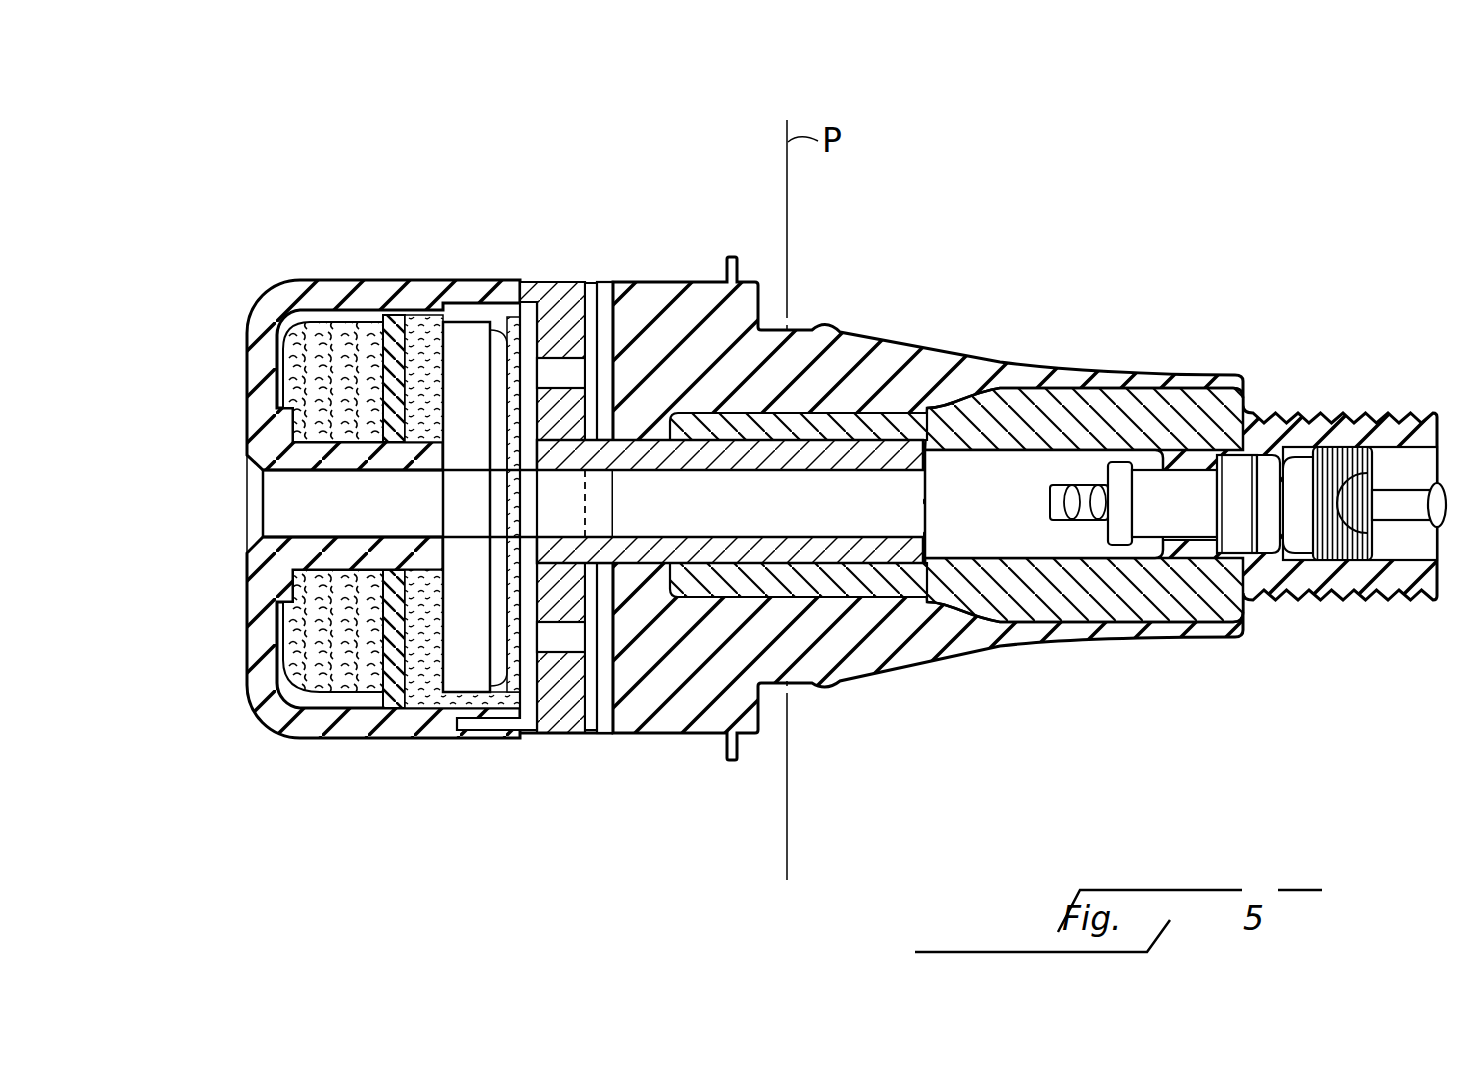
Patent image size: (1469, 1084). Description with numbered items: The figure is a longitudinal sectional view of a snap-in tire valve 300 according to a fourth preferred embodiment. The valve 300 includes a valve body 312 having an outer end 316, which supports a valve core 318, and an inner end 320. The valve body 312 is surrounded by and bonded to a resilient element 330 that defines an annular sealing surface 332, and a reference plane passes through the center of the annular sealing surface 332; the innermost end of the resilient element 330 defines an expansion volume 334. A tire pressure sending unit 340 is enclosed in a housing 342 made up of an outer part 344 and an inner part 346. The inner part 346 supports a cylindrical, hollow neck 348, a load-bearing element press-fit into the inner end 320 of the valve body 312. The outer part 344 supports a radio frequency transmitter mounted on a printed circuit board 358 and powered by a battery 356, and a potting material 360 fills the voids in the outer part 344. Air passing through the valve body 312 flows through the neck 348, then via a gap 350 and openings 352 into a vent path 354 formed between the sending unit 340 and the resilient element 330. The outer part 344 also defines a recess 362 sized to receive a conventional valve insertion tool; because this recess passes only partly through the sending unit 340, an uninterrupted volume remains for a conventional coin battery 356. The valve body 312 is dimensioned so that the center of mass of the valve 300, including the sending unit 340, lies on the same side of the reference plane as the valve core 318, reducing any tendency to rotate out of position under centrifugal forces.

The snap-in tire valve 300 is at (941, 493).
The valve body 312 is at (1070, 410).
The outer end 316 is at (1320, 427).
The valve core 318 is at (1242, 528).
The inner end 320 is at (798, 420).
The resilient element 330 is at (964, 642).
The annular sealing surface 332 is at (812, 320).
The expansion volume 334 is at (604, 317).
The tire pressure sending unit 340 is at (428, 484).
The housing 342 is at (546, 741).
The outer part 344 is at (260, 388).
The inner part 346 is at (550, 290).
The neck 348 is at (885, 552).
The gap 350 is at (532, 700).
The openings 352 is at (565, 632).
The vent path 354 is at (589, 283).
The battery 356 is at (467, 340).
The printed circuit board 358 is at (382, 736).
The potting material 360 is at (330, 345).
The recess 362 is at (290, 513).